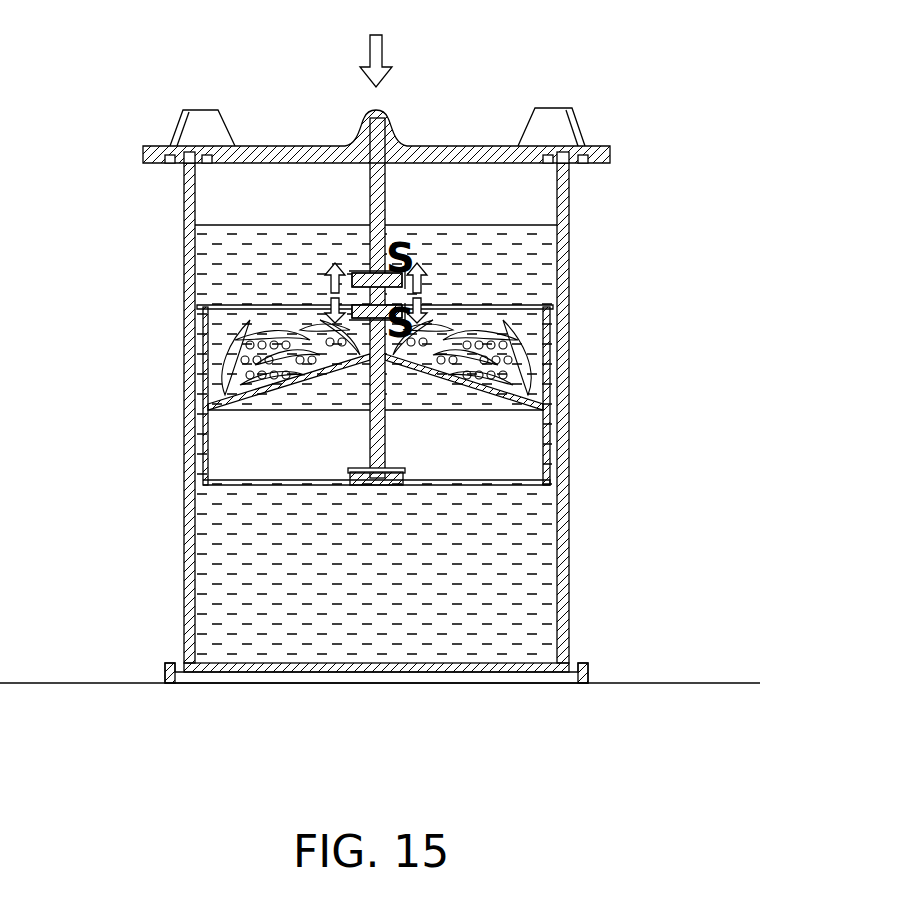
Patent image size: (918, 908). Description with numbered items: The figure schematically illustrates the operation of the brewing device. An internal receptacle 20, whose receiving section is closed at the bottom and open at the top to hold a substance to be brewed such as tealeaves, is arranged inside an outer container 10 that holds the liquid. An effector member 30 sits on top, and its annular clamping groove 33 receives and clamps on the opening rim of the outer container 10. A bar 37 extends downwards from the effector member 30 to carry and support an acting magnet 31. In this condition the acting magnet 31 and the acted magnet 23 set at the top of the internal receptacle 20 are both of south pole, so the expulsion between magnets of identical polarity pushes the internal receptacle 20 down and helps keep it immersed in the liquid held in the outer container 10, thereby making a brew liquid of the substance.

The outer container 10 is at (568, 370).
The internal receptacle 20 is at (552, 400).
The acted magnet 23 is at (400, 297).
The effector member 30 is at (151, 141).
The acting magnet 31 is at (352, 295).
The annular clamping groove 33 is at (563, 147).
The bar 37 is at (370, 200).